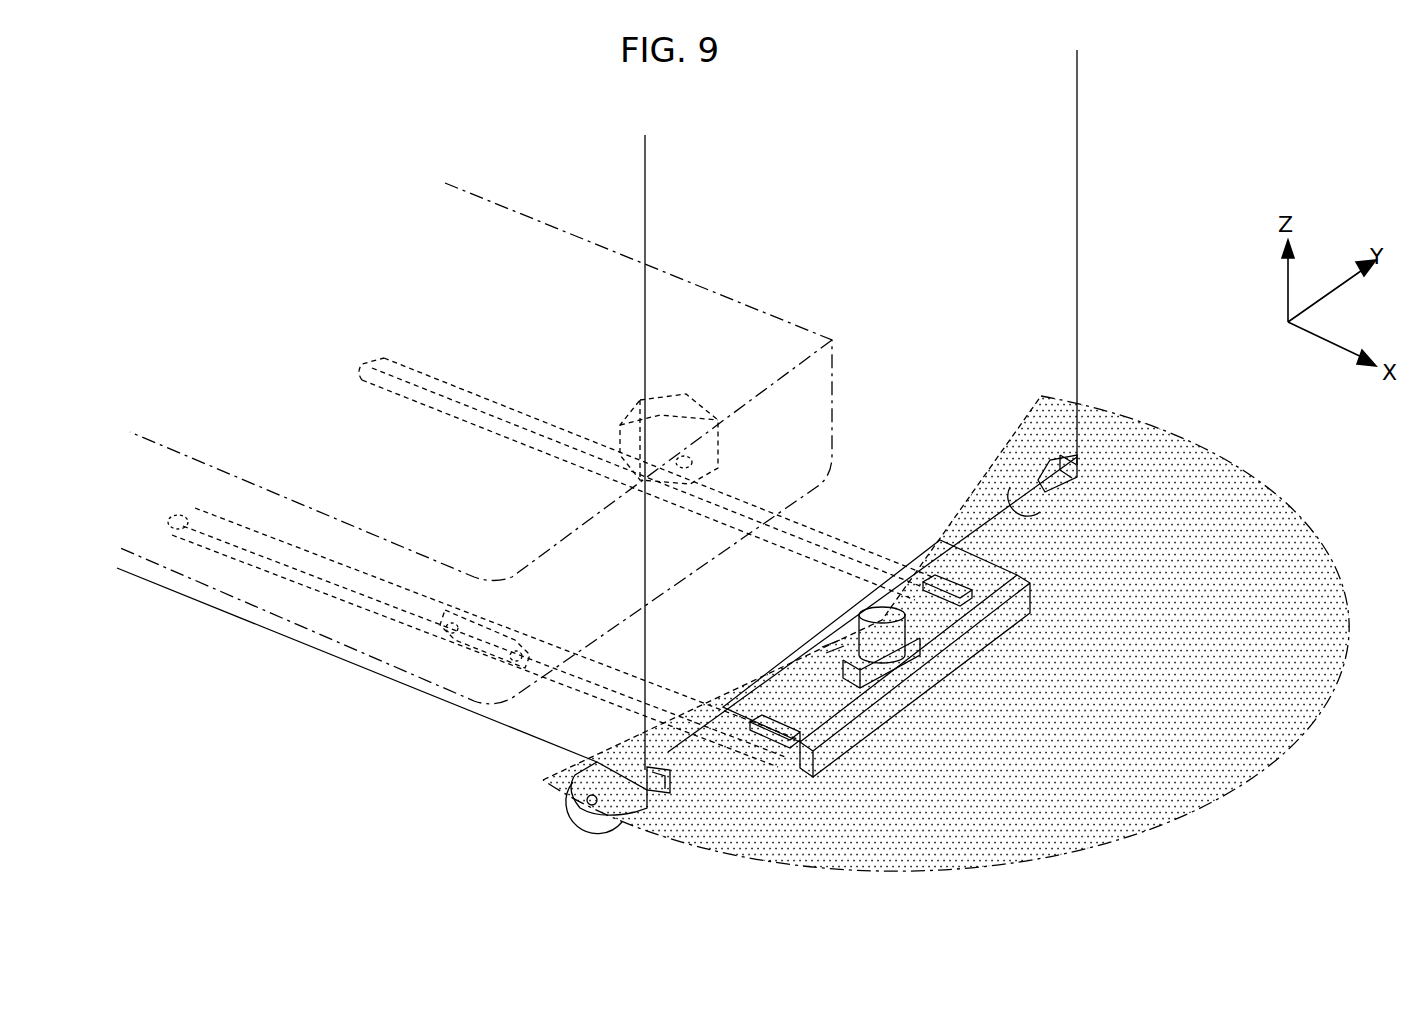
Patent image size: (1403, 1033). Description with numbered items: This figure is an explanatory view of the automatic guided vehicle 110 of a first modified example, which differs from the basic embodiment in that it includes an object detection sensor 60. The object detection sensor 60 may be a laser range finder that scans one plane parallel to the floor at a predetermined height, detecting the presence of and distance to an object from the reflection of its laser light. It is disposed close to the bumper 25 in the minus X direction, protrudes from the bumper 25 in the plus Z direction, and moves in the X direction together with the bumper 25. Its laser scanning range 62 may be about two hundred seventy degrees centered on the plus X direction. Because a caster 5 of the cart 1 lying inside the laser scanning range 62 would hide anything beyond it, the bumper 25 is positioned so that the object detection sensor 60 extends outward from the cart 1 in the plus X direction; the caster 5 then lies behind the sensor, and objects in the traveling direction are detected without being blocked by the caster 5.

The cart 1 is at (1080, 222).
The caster 5 is at (588, 830).
The bumper 25 is at (853, 733).
The object detection sensor 60 is at (893, 615).
The laser scanning range 62 is at (1112, 848).
The automatic guided vehicle 110 is at (738, 286).